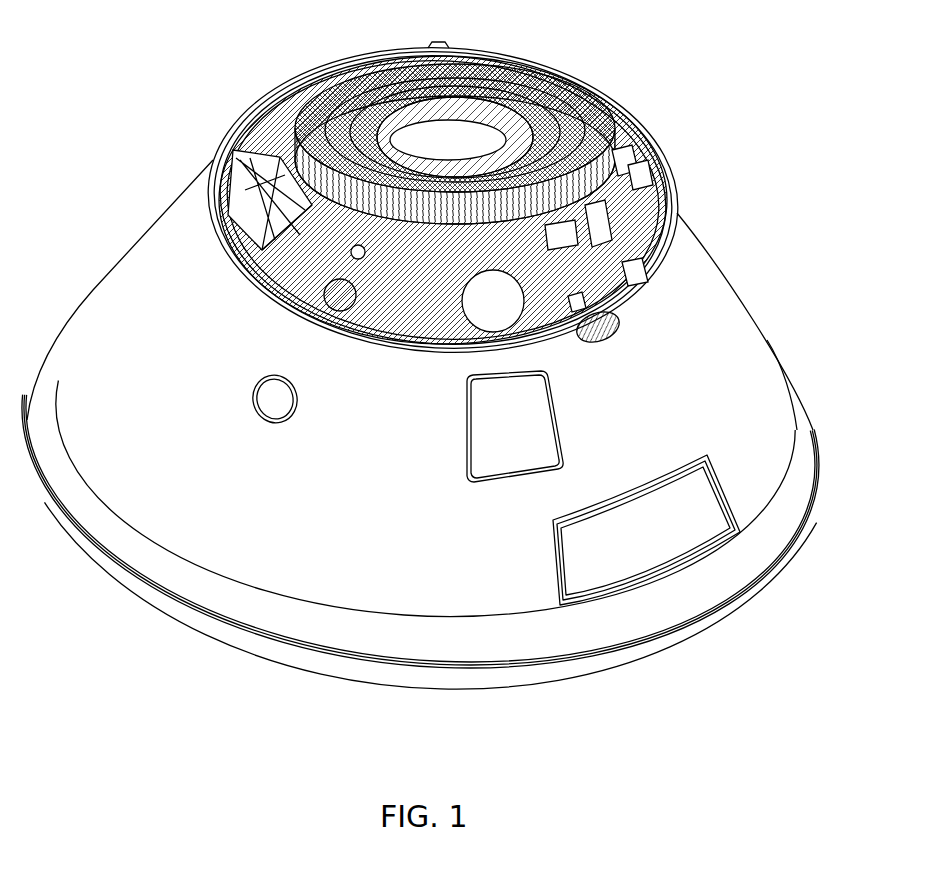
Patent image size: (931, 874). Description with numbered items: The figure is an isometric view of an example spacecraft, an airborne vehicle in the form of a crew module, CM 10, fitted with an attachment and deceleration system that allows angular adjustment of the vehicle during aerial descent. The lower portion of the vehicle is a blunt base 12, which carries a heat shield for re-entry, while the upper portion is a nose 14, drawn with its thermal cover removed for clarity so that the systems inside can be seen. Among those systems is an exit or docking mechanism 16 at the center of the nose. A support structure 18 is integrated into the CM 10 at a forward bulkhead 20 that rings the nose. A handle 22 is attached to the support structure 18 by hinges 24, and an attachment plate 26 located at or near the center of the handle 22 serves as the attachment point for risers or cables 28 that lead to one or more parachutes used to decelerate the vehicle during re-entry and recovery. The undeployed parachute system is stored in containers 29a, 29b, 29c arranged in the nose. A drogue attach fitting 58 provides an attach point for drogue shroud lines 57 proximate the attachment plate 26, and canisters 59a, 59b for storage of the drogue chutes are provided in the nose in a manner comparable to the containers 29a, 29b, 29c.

The CM 10 is at (461, 575).
The blunt base 12 is at (217, 643).
The nose 14 is at (480, 42).
The exit or docking mechanism 16 is at (380, 105).
The support structure 18 is at (358, 252).
The forward bulkhead 20 is at (238, 137).
The handle 22 is at (600, 220).
The hinges 24 is at (583, 107).
The attachment plate 26 is at (560, 233).
The risers or cables 28 is at (620, 165).
The container 29a is at (335, 300).
The container 29b is at (227, 182).
The container 29c is at (633, 172).
The drogue shroud lines 57 is at (573, 303).
The drogue attach fitting 58 is at (563, 263).
The canister 59a is at (512, 320).
The canister 59b is at (632, 272).